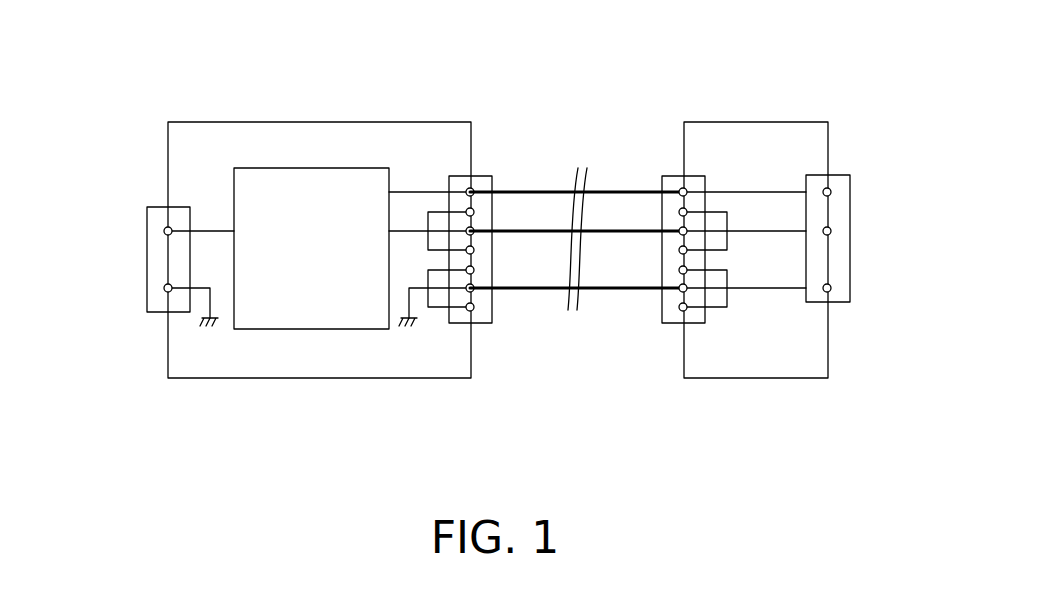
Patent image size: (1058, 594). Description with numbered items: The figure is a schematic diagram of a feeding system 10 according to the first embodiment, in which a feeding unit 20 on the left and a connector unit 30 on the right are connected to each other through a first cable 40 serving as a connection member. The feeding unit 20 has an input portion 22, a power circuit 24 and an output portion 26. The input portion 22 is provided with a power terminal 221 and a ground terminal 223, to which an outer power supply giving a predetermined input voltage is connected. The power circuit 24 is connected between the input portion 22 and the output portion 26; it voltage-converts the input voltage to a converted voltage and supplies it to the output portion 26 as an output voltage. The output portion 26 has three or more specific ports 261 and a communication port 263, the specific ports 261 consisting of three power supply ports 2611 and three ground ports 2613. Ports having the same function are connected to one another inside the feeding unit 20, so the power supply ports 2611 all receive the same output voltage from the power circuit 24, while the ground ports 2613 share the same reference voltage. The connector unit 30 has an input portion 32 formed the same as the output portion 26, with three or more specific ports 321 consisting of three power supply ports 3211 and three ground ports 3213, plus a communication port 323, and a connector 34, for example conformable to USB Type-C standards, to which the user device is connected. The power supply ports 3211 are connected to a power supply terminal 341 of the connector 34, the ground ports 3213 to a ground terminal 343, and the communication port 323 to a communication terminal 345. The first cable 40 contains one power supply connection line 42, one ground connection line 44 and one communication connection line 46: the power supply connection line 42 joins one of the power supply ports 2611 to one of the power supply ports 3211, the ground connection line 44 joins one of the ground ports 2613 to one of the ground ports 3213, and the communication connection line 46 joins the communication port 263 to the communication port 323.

The feeding system 10 is at (516, 37).
The feeding unit 20 is at (307, 122).
The input portion 22 is at (165, 207).
The power terminal 221 is at (164, 231).
The ground terminal 223 is at (164, 288).
The power circuit 24 is at (306, 329).
The output portion 26 is at (462, 176).
The specific ports 261 is at (483, 342).
The power supply ports 2611 is at (475, 214).
The ground ports 2613 is at (467, 272).
The communication port 263 is at (474, 189).
The connector unit 30 is at (771, 122).
The input portion 32 is at (693, 176).
The specific ports 321 is at (667, 342).
The power supply ports 3211 is at (678, 214).
The ground ports 3213 is at (686, 272).
The communication port 323 is at (680, 189).
The connector 34 is at (812, 175).
The power supply terminal 341 is at (832, 231).
The ground terminal 343 is at (832, 288).
The communication terminal 345 is at (832, 192).
The first cable 40 is at (576, 191).
The power supply connection line 42 is at (550, 229).
The ground connection line 44 is at (615, 286).
The communication connection line 46 is at (526, 190).